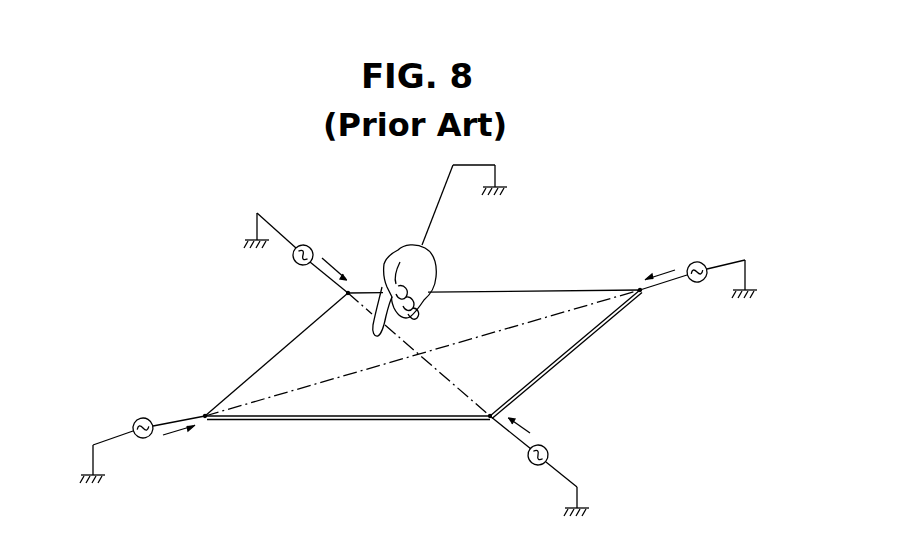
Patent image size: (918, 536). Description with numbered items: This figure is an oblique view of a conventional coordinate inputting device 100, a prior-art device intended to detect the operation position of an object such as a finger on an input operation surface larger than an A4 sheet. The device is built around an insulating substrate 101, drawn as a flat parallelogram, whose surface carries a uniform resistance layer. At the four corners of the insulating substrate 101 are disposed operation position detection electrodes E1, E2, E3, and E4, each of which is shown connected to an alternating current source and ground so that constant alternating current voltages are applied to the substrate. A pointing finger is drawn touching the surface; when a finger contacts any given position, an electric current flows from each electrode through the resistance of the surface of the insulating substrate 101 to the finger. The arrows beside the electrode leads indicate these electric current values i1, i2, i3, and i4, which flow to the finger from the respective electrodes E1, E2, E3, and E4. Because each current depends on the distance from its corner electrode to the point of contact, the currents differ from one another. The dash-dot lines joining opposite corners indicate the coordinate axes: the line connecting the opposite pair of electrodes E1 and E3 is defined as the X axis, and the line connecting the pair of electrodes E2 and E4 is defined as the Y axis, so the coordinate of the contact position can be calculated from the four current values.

The coordinate inputting device 100 is at (196, 231).
The insulating substrate 101 is at (478, 310).
The operation position detection electrode E1 is at (343, 293).
The operation position detection electrode E2 is at (642, 295).
The operation position detection electrode E3 is at (487, 420).
The operation position detection electrode E4 is at (205, 412).
The electric current value i1 is at (338, 264).
The electric current value i2 is at (660, 264).
The electric current value i3 is at (526, 420).
The electric current value i4 is at (179, 442).